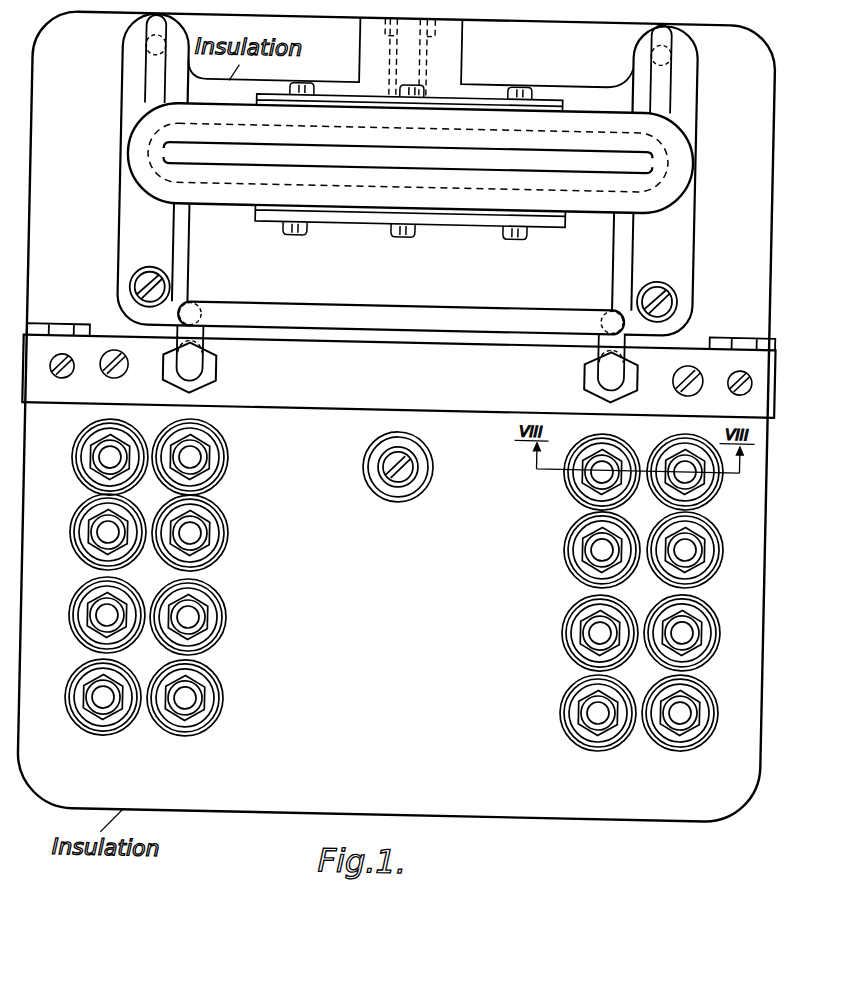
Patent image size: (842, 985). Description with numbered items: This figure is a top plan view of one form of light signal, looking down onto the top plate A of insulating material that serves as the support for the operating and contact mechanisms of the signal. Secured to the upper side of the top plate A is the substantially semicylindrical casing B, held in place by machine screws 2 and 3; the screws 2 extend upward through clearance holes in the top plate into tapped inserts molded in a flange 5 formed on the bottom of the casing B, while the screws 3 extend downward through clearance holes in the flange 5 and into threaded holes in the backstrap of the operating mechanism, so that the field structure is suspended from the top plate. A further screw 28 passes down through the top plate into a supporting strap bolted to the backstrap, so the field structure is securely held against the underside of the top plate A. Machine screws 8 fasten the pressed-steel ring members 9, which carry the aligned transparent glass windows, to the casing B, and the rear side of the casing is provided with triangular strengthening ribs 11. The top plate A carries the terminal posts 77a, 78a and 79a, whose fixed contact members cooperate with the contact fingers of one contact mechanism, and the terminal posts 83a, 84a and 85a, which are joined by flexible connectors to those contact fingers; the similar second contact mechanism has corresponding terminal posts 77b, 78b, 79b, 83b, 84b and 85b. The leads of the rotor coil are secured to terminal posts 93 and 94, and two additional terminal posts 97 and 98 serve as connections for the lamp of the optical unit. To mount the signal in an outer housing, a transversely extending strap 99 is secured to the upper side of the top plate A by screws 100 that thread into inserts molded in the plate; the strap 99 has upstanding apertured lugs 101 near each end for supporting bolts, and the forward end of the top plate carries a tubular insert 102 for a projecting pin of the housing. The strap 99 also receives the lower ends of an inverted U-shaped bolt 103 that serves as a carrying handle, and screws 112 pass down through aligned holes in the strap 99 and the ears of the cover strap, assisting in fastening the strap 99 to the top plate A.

The top plate A is at (661, 813).
The casing B is at (652, 159).
The machine screws 2 is at (140, 59).
The machine screws 3 is at (147, 275).
The flange 5 is at (686, 82).
The machine screws 8 is at (298, 88).
The ring members 9 is at (554, 226).
The strengthening ribs 11 is at (186, 241).
The screw 28 is at (386, 468).
The terminal post 93 is at (583, 475).
The terminal post 94 is at (702, 474).
The terminal post 97 is at (100, 471).
The terminal post 98 is at (203, 464).
The strap 99 is at (325, 411).
The screws 100 is at (114, 385).
The apertured lugs 101 is at (59, 331).
The tubular insert 102 is at (414, 54).
The inverted U-shaped bolt 103 is at (378, 306).
The screw 112 is at (397, 386).
The terminal post 77a is at (97, 711).
The terminal post 78a is at (97, 629).
The terminal post 79a is at (95, 550).
The terminal post 83a is at (203, 714).
The terminal post 84a is at (206, 631).
The terminal post 85a is at (204, 545).
The terminal post 77b is at (698, 718).
The terminal post 78b is at (696, 639).
The terminal post 79b is at (694, 556).
The terminal post 83b is at (588, 714).
The terminal post 84b is at (587, 631).
The terminal post 85b is at (585, 550).